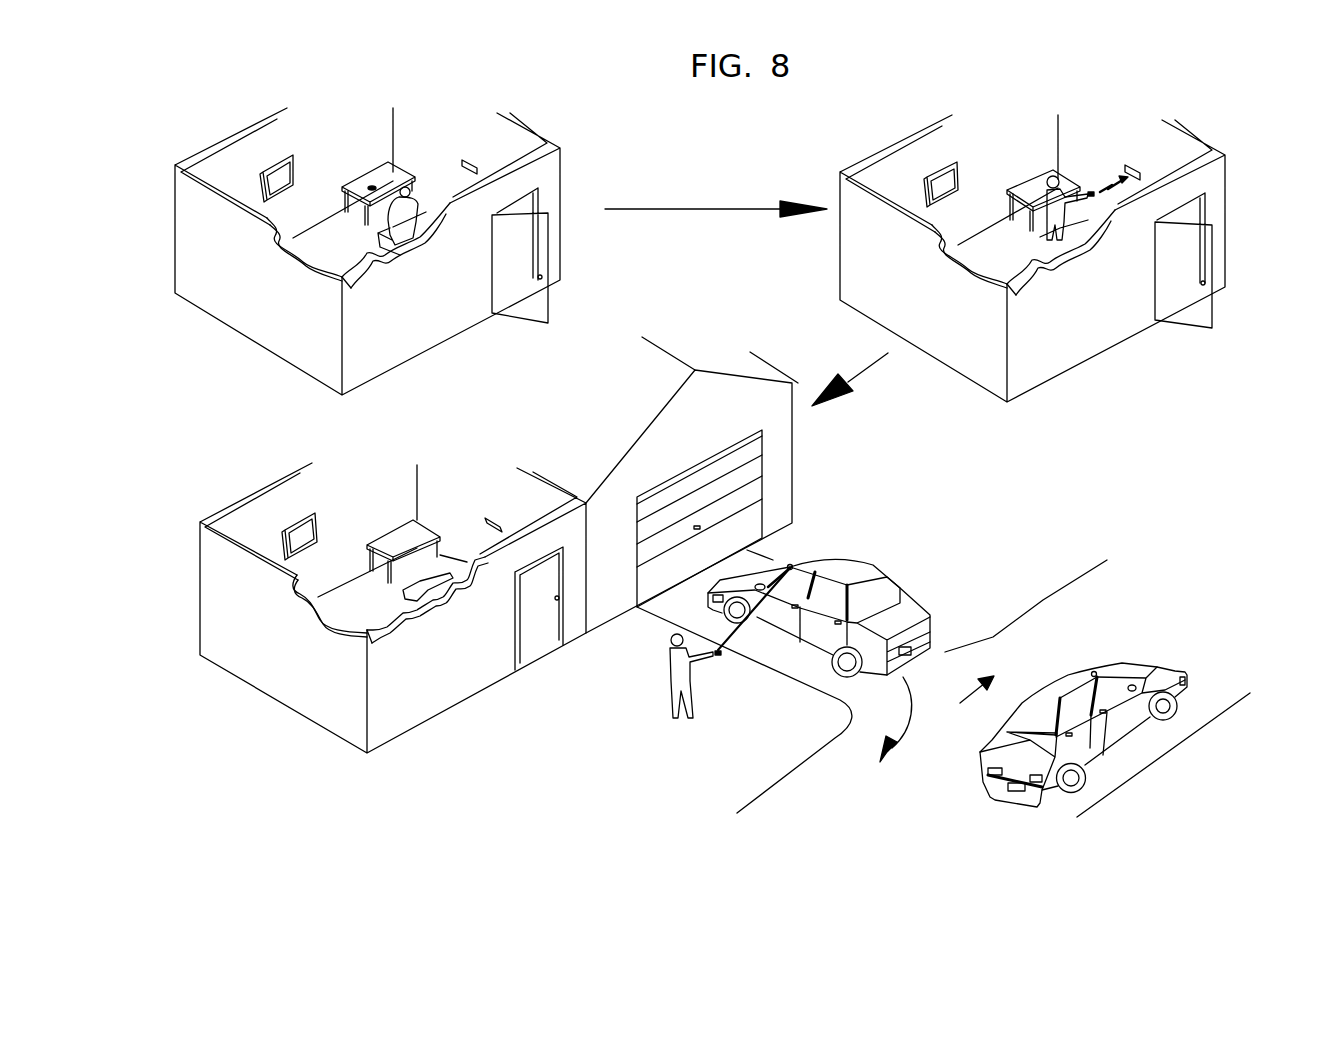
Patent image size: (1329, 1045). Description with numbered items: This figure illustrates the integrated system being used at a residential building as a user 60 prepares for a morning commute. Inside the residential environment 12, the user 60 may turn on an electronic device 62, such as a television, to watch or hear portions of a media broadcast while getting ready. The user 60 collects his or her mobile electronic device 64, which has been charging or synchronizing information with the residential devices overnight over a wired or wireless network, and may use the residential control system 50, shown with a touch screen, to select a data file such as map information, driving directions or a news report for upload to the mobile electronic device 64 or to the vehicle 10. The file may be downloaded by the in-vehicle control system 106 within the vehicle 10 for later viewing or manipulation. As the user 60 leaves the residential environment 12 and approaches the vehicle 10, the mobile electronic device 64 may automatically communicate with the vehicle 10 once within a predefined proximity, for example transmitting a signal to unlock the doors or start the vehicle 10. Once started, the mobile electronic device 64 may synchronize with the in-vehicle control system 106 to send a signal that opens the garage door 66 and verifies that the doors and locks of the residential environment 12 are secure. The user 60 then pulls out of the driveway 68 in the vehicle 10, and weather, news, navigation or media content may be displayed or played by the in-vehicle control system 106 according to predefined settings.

The vehicle 10 is at (850, 560).
The residential environment 12 is at (565, 164).
The residential control system 50 is at (470, 158).
The user 60 is at (427, 203).
The electronic device 62 is at (300, 160).
The mobile electronic device 64 is at (372, 188).
The garage door 66 is at (753, 470).
The driveway 68 is at (822, 674).
The in-vehicle control system 106 is at (791, 565).